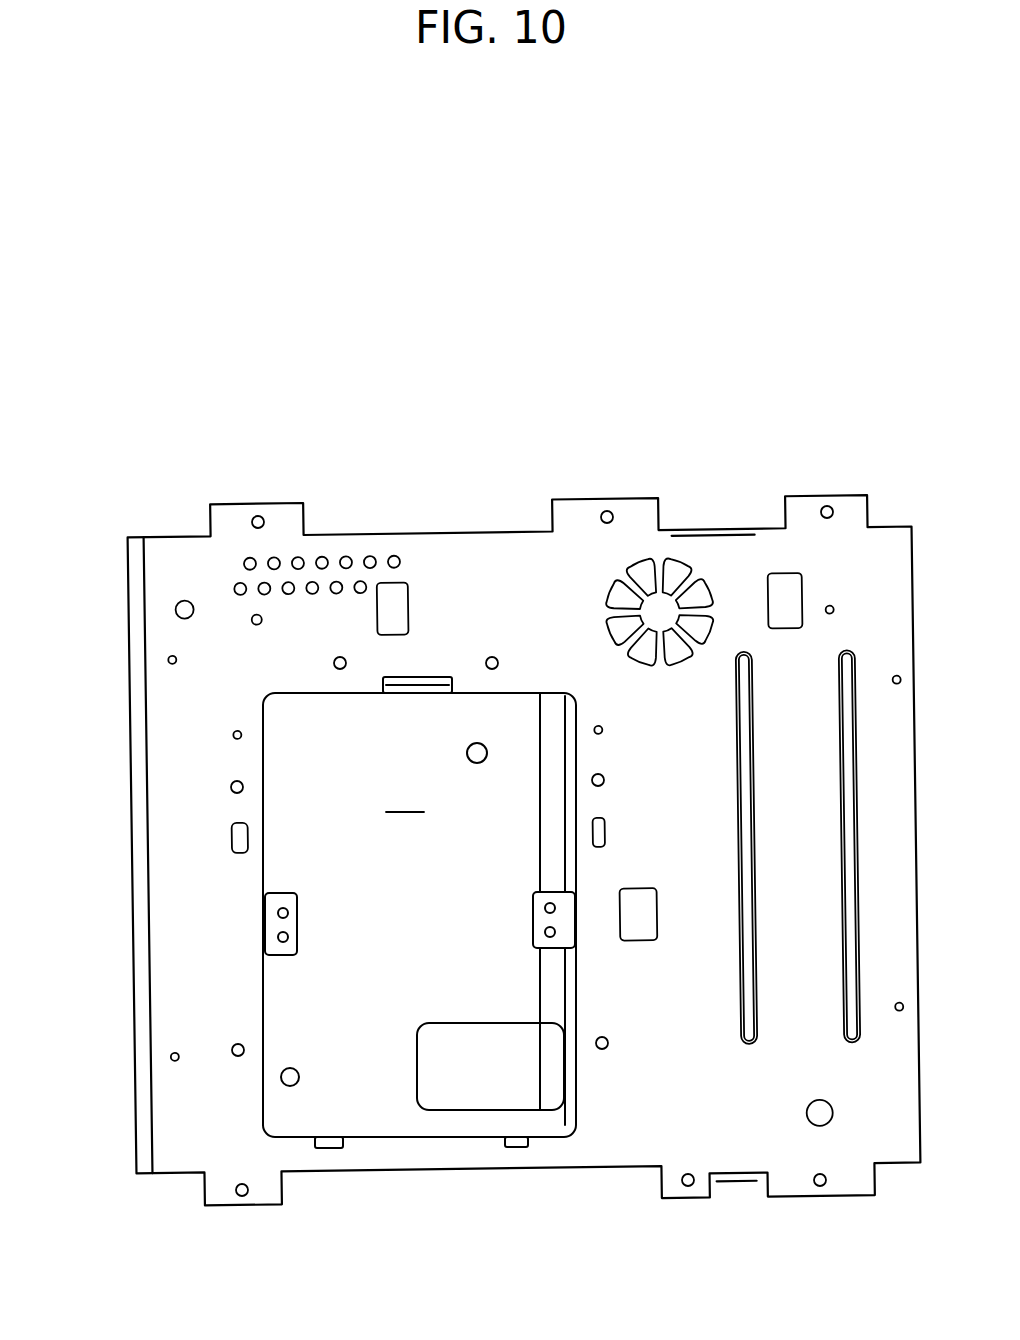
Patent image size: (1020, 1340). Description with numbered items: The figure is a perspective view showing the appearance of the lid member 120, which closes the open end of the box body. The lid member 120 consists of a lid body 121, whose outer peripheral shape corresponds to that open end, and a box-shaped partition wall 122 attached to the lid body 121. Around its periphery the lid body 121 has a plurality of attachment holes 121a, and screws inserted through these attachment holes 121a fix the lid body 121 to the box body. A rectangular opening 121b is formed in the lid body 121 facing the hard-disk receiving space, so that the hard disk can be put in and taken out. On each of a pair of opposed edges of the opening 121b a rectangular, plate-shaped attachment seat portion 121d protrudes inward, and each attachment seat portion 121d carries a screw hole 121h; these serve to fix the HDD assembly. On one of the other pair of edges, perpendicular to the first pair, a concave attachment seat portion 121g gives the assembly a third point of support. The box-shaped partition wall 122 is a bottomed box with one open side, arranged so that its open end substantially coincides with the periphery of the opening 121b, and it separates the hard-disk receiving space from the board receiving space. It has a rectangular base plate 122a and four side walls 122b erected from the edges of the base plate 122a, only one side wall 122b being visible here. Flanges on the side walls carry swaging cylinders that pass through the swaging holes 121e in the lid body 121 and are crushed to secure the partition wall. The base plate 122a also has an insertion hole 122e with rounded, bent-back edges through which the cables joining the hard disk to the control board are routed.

The lid member 120 is at (445, 406).
The lid body 121 is at (481, 576).
The attachment holes 121a is at (258, 515).
The opening 121b is at (567, 725).
The attachment seat portion 121d is at (540, 918).
The swaging holes 121e is at (491, 655).
The concave attachment seat portion 121g is at (415, 690).
The screw hole 121h is at (540, 932).
The box-shaped partition wall 122 is at (320, 758).
The base plate 122a is at (350, 1073).
The side wall 122b is at (554, 800).
The insertion hole 122e is at (480, 1074).